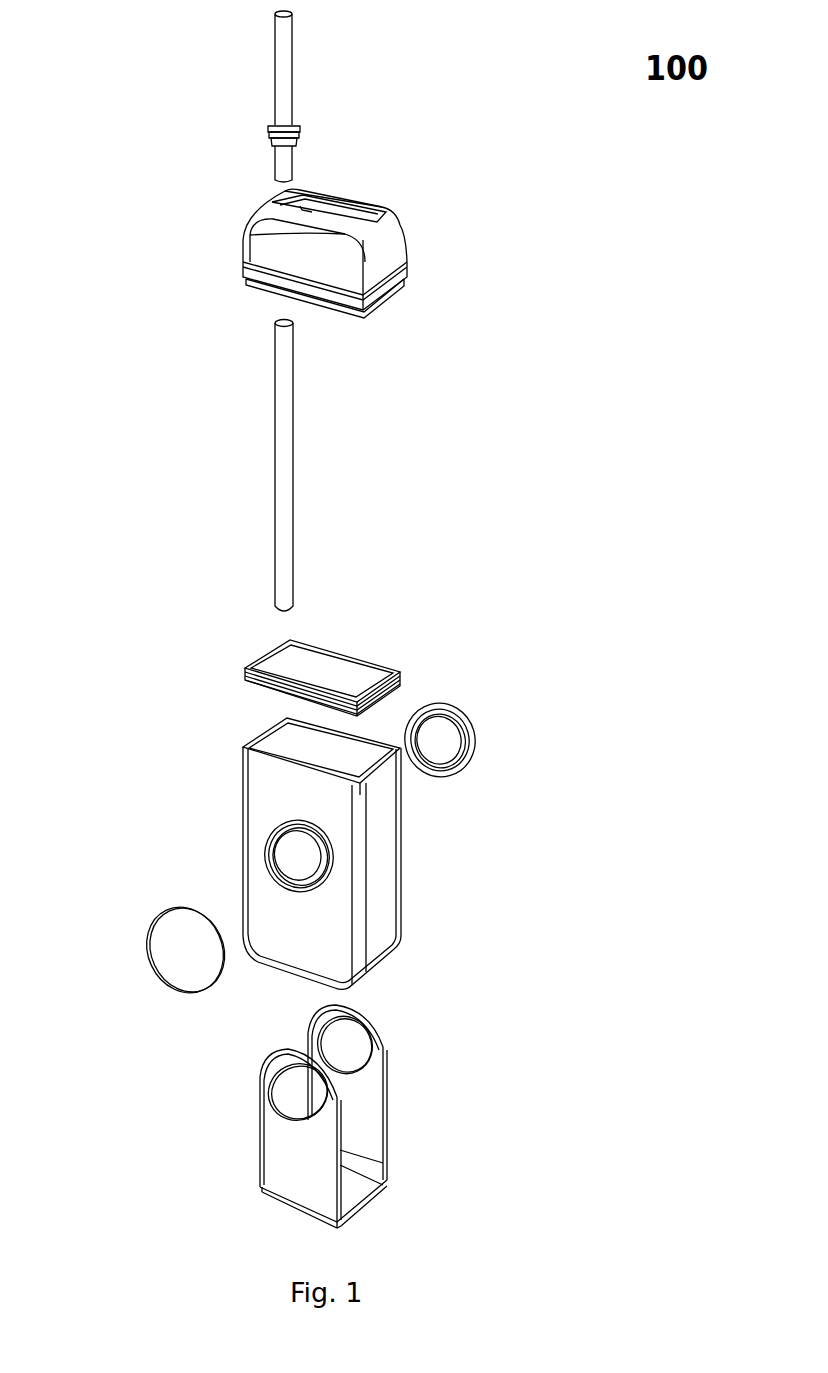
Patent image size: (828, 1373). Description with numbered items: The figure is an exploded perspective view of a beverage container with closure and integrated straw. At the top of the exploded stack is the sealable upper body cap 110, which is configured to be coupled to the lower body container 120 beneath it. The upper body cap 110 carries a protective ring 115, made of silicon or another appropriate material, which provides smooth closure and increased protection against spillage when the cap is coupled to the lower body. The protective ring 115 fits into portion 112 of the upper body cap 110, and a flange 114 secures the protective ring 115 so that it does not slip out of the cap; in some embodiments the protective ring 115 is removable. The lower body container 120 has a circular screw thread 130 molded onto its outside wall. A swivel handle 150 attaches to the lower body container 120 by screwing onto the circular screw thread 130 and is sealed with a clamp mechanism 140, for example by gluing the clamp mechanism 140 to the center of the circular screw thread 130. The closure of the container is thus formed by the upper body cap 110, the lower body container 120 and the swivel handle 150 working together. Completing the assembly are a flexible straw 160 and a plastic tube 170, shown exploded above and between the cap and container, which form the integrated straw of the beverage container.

The upper body cap 110 is at (353, 256).
The portion of the upper body cap 112 is at (402, 273).
The flange 114 is at (372, 306).
The protective ring 115 is at (240, 680).
The lower body container 120 is at (334, 853).
The circular screw thread 130 is at (290, 832).
The clamp mechanism 140 is at (452, 735).
The swivel handle 150 is at (365, 1112).
The flexible straw 160 is at (262, 67).
The plastic tube 170 is at (262, 433).